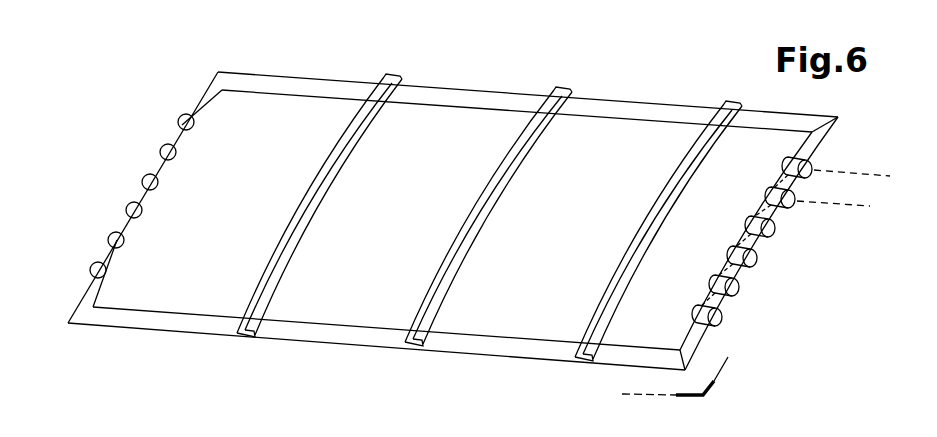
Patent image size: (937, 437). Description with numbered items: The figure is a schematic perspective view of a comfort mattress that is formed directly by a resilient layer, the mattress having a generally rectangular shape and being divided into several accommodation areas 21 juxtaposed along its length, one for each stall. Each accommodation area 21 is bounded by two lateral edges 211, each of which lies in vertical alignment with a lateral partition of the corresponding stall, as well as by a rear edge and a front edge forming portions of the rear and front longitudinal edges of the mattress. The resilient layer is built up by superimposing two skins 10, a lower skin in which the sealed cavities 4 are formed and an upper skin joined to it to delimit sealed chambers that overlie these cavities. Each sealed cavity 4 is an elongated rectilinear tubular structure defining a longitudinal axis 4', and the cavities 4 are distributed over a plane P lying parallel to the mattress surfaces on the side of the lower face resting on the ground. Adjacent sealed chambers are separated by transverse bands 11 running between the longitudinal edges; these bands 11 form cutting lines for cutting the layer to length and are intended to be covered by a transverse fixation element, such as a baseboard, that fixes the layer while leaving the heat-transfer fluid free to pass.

The transverse band 11 is at (77, 297).
The accommodation area 21 is at (438, 118).
The skin 10 is at (275, 275).
The lateral edge 211 is at (537, 211).
The sealed cavity 4 is at (770, 176).
The longitudinal axis 4' is at (843, 191).
The plane P is at (716, 389).